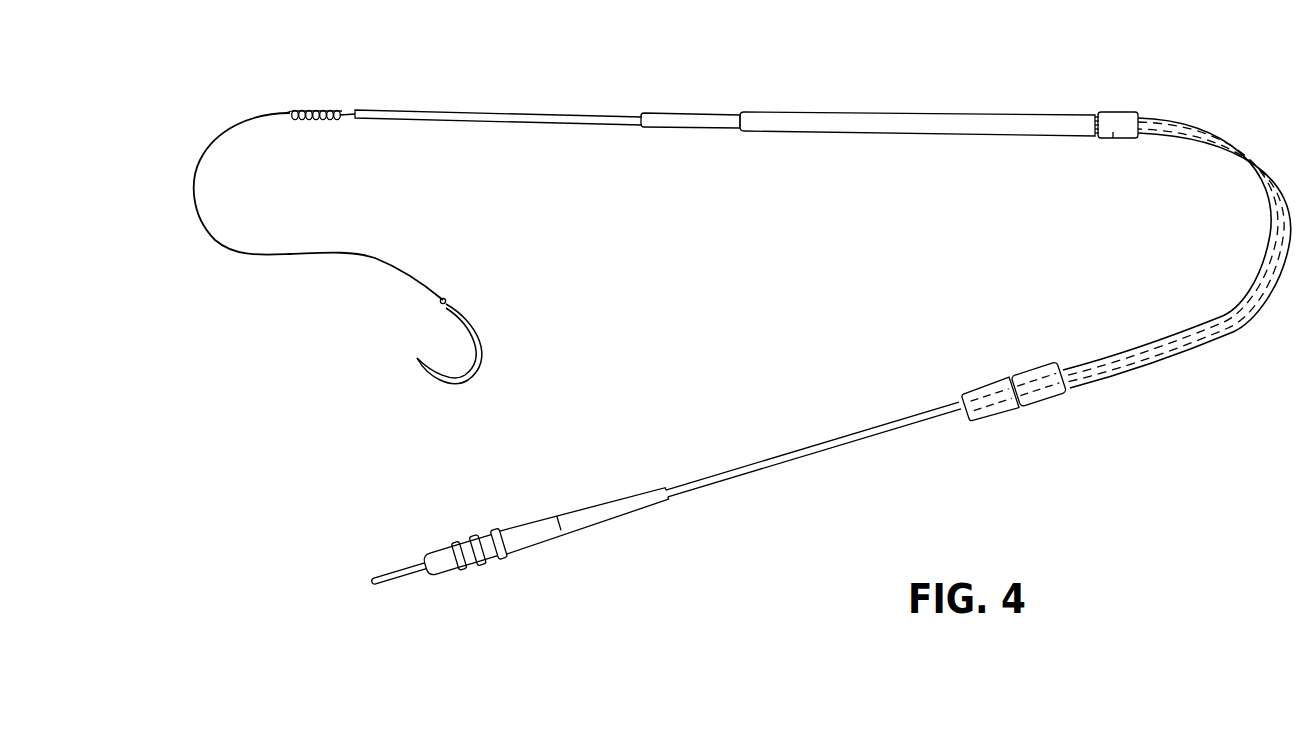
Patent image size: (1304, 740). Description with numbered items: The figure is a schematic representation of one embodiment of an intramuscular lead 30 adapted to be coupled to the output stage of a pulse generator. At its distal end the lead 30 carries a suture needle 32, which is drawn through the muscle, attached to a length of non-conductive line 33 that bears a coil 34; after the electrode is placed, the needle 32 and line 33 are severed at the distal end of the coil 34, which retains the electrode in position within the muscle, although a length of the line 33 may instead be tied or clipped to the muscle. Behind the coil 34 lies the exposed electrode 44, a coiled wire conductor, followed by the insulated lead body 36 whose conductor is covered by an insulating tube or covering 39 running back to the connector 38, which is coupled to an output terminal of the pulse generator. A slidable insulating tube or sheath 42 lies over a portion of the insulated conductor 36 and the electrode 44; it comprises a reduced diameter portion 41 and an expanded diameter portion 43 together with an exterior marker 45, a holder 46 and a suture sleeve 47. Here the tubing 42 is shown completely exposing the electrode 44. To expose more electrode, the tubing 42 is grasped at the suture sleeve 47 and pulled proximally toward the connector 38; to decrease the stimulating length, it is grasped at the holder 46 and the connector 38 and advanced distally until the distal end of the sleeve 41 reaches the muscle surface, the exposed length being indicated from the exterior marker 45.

The intramuscular lead 30 is at (532, 94).
The suture needle 32 is at (470, 380).
The non-conductive line 33 is at (277, 256).
The coil 34 is at (318, 106).
The lead body 36 is at (813, 474).
The connector 38 is at (531, 547).
The insulating tube or covering 39 is at (787, 466).
The reduced diameter portion 41 is at (685, 113).
The slidable insulating tube or sheath 42 is at (1232, 224).
The expanded diameter portion 43 is at (828, 112).
The electrode 44 is at (532, 121).
The exterior marker 45 is at (1112, 140).
The holder 46 is at (1112, 112).
The suture sleeve 47 is at (1040, 410).